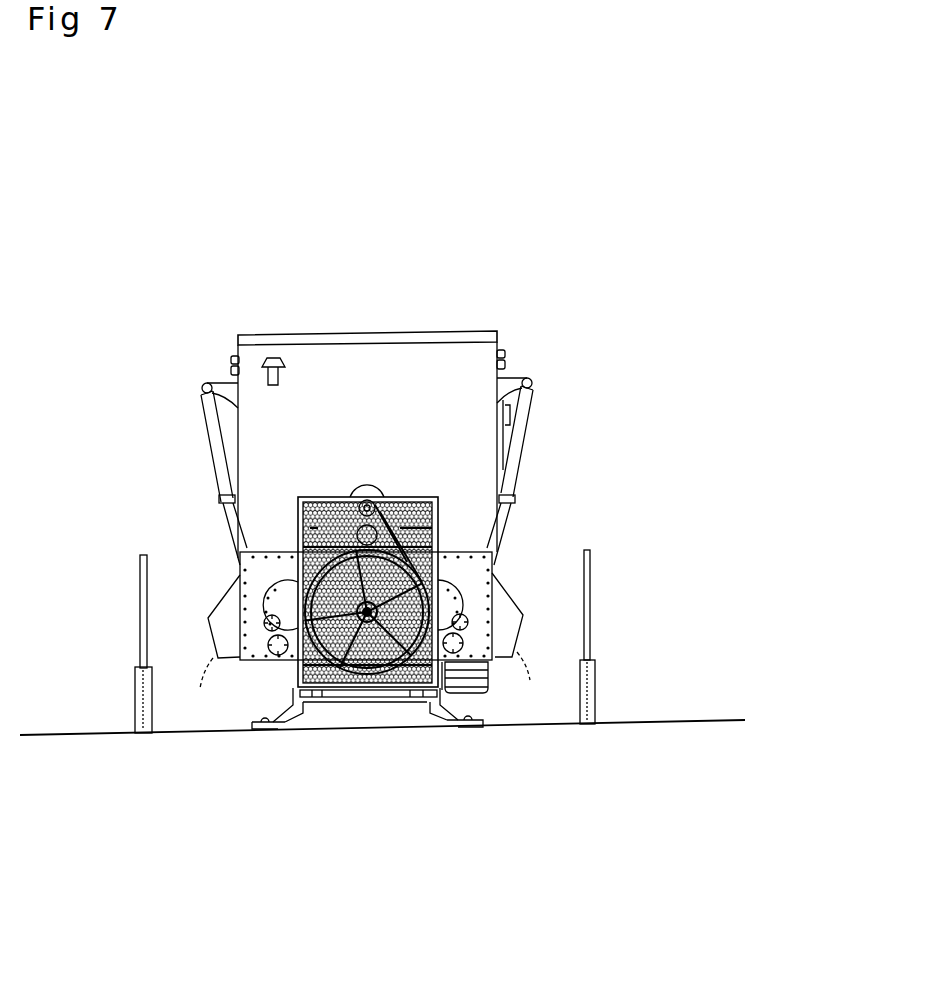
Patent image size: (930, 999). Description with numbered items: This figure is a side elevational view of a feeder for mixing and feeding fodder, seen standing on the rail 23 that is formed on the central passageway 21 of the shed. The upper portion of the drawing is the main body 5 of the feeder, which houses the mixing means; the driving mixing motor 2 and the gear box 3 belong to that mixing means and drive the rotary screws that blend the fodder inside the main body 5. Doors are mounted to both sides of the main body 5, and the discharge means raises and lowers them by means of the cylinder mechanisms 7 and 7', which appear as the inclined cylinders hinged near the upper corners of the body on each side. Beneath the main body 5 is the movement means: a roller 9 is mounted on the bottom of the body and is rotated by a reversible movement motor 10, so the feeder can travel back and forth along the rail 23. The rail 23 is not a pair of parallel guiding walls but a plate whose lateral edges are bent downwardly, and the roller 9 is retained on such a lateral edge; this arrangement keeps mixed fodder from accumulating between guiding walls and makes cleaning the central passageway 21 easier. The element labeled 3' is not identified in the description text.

The driving mixing motor 2 is at (363, 487).
The main body 5 is at (438, 358).
The cylinder mechanism 7 is at (172, 470).
The cylinder mechanism 7' is at (558, 455).
The gear box 3 is at (411, 577).
The left support foot 3' is at (206, 786).
The roller 9 is at (455, 728).
The reversible movement motor 10 is at (486, 694).
The central passageway 21 is at (670, 720).
The rail 23 is at (427, 702).